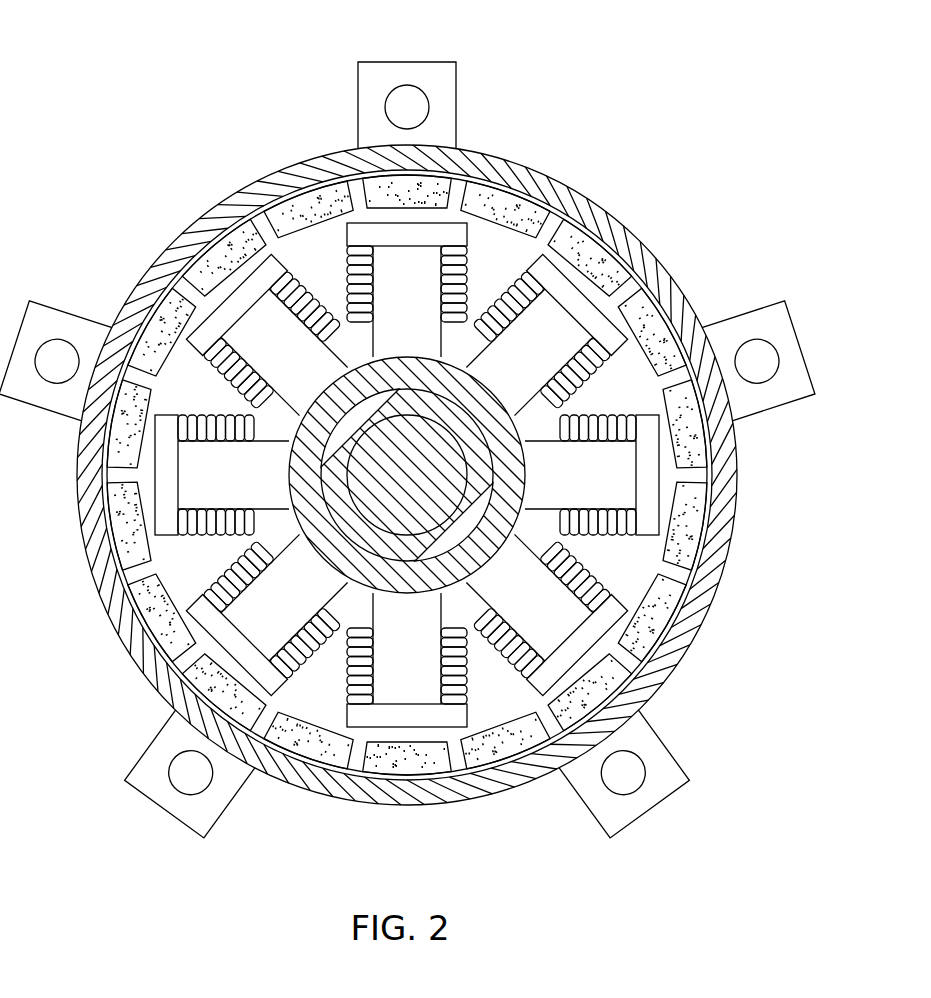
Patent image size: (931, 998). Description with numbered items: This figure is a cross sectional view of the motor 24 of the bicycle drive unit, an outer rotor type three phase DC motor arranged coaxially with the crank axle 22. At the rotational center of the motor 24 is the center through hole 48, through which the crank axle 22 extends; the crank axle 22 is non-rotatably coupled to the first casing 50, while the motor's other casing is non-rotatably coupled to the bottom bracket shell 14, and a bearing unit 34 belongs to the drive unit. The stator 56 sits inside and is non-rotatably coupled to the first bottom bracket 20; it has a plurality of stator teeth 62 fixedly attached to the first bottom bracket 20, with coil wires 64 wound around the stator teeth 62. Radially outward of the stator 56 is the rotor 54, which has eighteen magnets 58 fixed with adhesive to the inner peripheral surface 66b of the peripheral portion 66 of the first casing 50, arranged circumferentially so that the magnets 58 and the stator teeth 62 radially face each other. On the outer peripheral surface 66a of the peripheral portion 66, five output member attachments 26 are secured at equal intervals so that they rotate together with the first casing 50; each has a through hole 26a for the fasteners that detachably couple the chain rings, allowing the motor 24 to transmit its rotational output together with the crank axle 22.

The bottom bracket shell 14 is at (511, 481).
The first bottom bracket 20 is at (322, 566).
The crank axle 22 is at (346, 469).
The motor 24 is at (641, 137).
The output member attachments 26 is at (352, 97).
The through holes 26a is at (407, 90).
The bearing unit 34 is at (414, 566).
The center through hole 48 is at (466, 545).
The first casing 50 is at (680, 272).
The rotor 54 is at (648, 378).
The stator 56 is at (338, 285).
The magnets 58 is at (503, 200).
The stator teeth 62 is at (406, 332).
The coil wires 64 is at (463, 285).
The peripheral portion 66 is at (630, 242).
The outer peripheral surface 66a is at (538, 178).
The inner peripheral surface 66b is at (573, 213).